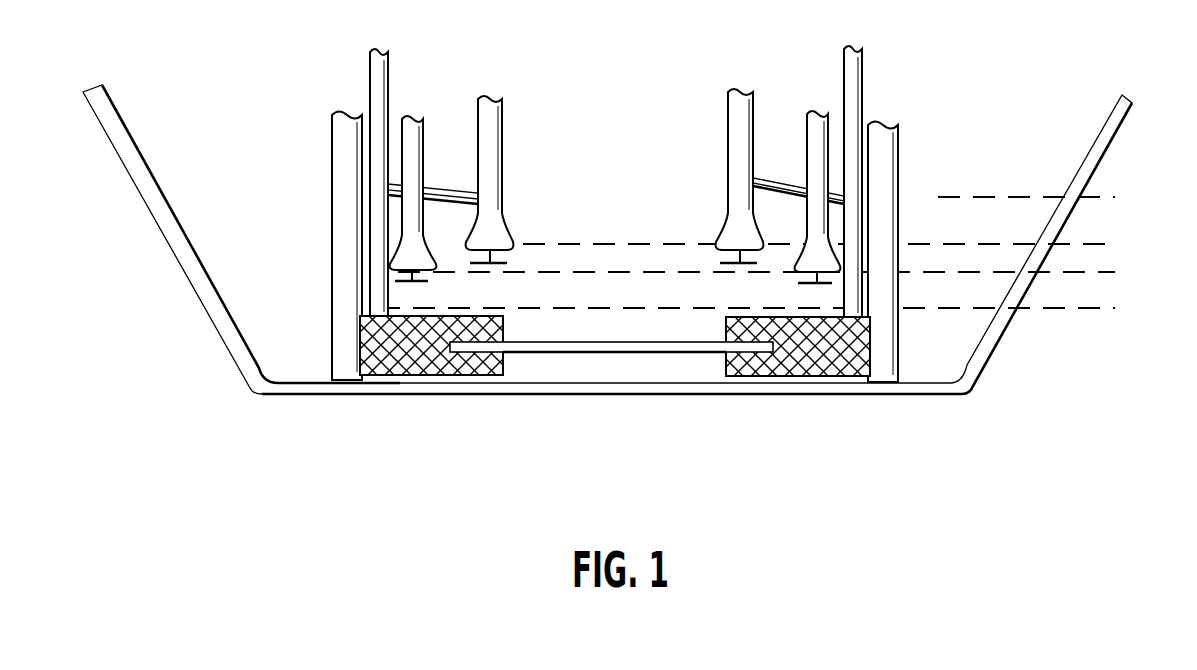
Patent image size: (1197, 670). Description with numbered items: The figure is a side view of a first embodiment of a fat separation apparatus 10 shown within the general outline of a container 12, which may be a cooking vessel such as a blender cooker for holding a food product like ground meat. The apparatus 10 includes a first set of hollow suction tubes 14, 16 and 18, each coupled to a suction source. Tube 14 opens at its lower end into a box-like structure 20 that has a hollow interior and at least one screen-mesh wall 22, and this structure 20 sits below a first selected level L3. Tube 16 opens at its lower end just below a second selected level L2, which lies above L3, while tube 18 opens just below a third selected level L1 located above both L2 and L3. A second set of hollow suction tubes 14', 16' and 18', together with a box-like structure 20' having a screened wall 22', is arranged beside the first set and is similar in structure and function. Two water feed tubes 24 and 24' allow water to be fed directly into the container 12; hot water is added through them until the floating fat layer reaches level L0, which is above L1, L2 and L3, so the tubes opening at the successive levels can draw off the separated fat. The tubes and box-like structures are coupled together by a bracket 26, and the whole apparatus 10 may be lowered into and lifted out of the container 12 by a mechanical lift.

The fat separation apparatus 10 is at (256, 130).
The container 12 is at (170, 243).
The hollow suction tube 14 is at (413, 166).
The hollow suction tube 14' is at (896, 181).
The hollow suction tube 16 is at (427, 179).
The hollow suction tube 16' is at (802, 180).
The hollow suction tube 18 is at (516, 179).
The hollow suction tube 18' is at (703, 176).
The box-like structure 20 is at (431, 388).
The box-like structure 20' is at (797, 389).
The screen-mesh wall 22 is at (406, 345).
The screened wall 22' is at (789, 387).
The water feed tube 24 is at (295, 246).
The water feed tube 24' is at (921, 252).
The bracket 26 is at (565, 353).
The liquid level L0 is at (1048, 197).
The third selected level L1 is at (839, 245).
The second selected level L2 is at (778, 273).
The first selected level L3 is at (768, 308).